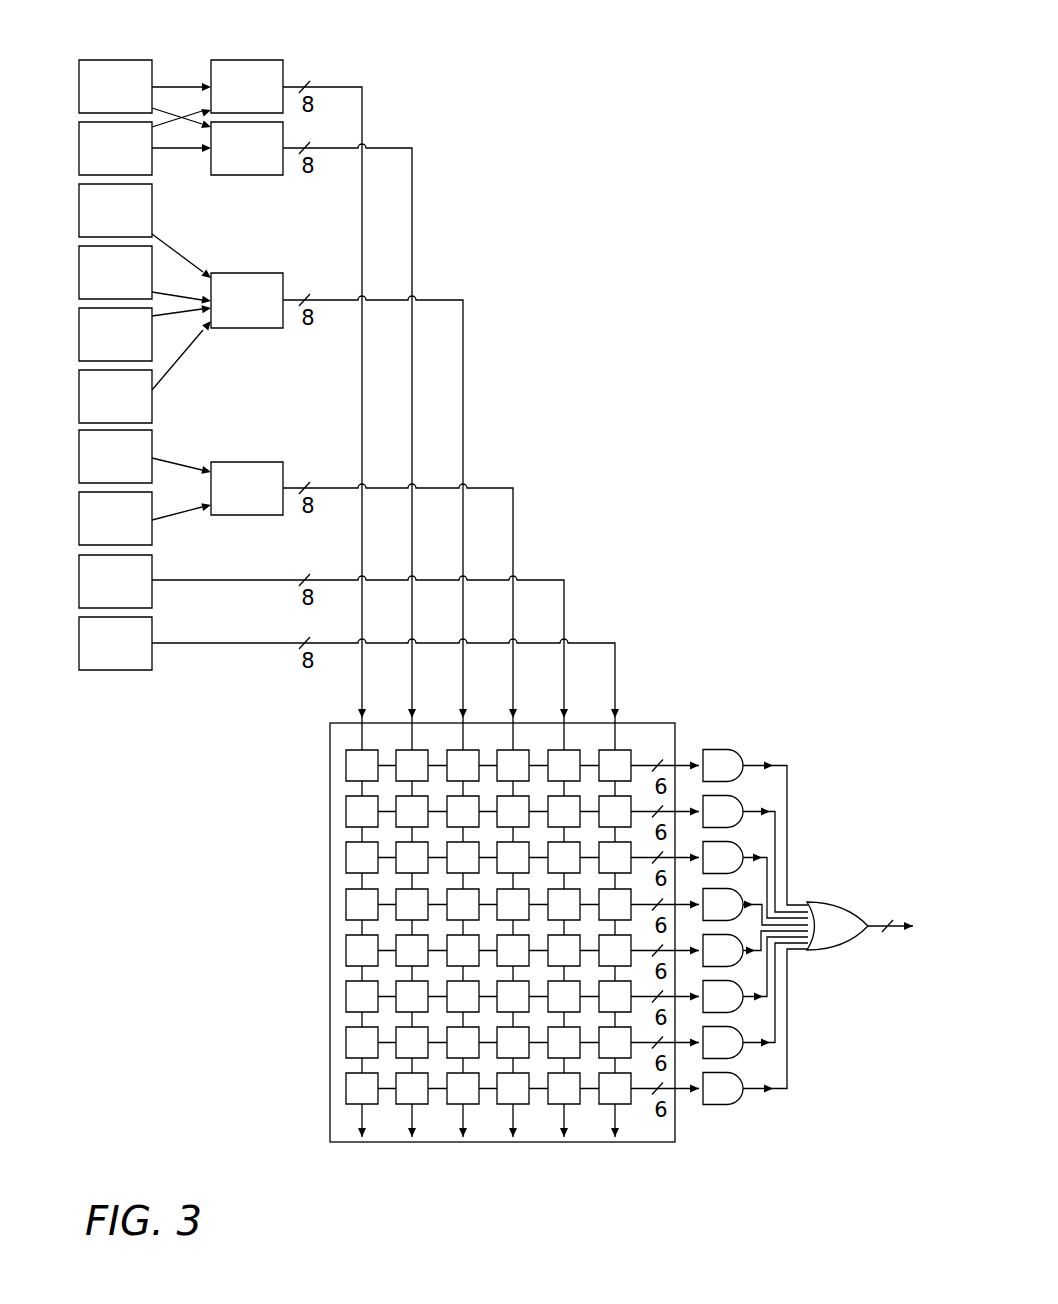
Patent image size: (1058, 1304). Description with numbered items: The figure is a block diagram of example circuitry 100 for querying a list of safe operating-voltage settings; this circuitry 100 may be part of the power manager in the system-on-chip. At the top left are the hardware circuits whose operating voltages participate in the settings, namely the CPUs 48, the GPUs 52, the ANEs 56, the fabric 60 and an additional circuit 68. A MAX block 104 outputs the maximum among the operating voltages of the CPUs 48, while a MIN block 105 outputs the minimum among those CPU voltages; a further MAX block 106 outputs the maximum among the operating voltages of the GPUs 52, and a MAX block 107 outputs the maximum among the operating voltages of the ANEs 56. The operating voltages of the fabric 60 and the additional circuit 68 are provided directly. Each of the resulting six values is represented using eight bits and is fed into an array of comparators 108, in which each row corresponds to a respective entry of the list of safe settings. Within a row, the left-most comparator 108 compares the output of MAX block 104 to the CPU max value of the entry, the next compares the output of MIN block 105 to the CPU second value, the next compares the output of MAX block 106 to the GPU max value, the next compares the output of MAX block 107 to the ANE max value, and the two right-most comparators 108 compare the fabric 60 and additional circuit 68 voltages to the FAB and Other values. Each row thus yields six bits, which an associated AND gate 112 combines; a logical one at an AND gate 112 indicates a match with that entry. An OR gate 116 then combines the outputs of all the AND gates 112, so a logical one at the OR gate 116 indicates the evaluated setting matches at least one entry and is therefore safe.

The circuitry 100 is at (828, 56).
The CPUs 48 is at (79, 86).
The GPUs 52 is at (79, 210).
The ANEs 56 is at (79, 456).
The fabric 60 is at (79, 581).
The additional circuit 68 is at (79, 643).
The MAX block 104 is at (243, 60).
The MIN block 105 is at (248, 175).
The MAX block 106 is at (248, 328).
The MAX block 107 is at (248, 515).
The comparator 108 is at (345, 846).
The AND gate 112 is at (720, 749).
The OR gate 116 is at (822, 952).